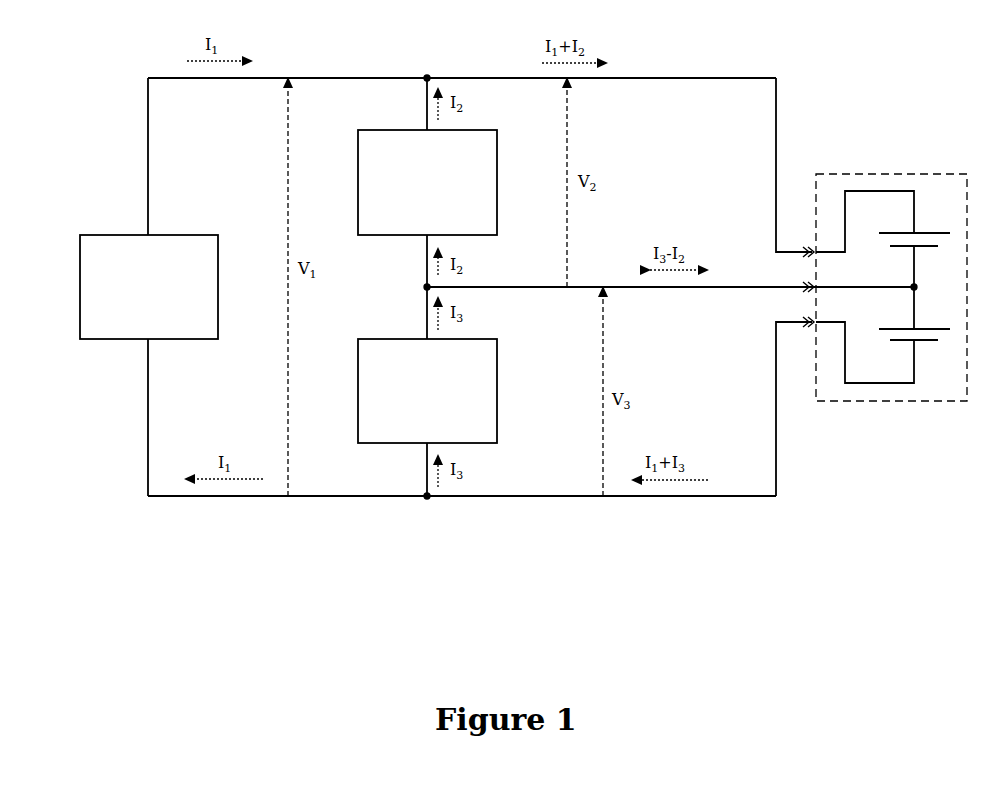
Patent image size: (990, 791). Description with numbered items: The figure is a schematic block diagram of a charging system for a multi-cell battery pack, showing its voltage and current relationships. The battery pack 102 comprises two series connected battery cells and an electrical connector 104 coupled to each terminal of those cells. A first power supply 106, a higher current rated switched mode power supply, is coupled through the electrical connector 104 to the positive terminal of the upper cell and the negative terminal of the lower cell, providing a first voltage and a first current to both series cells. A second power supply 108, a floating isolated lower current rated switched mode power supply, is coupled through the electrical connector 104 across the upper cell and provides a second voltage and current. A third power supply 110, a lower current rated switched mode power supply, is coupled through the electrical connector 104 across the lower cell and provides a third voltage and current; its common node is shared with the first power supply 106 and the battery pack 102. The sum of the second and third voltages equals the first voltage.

The battery pack 102 is at (897, 173).
The electrical connector 104 is at (806, 297).
The first power supply 106 is at (119, 233).
The second power supply 108 is at (373, 130).
The third power supply 110 is at (373, 338).